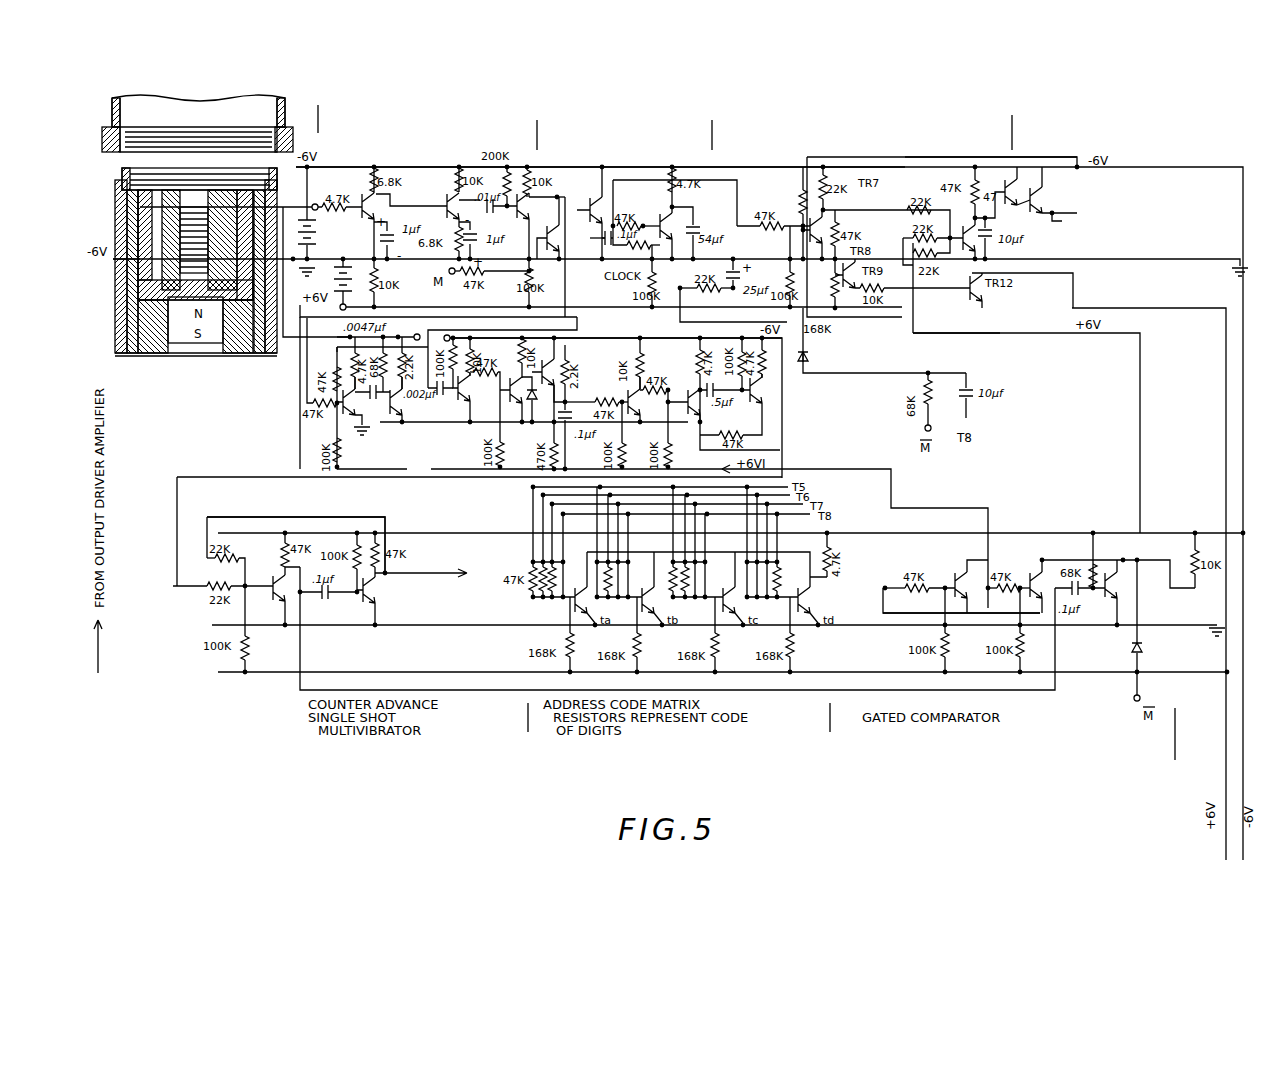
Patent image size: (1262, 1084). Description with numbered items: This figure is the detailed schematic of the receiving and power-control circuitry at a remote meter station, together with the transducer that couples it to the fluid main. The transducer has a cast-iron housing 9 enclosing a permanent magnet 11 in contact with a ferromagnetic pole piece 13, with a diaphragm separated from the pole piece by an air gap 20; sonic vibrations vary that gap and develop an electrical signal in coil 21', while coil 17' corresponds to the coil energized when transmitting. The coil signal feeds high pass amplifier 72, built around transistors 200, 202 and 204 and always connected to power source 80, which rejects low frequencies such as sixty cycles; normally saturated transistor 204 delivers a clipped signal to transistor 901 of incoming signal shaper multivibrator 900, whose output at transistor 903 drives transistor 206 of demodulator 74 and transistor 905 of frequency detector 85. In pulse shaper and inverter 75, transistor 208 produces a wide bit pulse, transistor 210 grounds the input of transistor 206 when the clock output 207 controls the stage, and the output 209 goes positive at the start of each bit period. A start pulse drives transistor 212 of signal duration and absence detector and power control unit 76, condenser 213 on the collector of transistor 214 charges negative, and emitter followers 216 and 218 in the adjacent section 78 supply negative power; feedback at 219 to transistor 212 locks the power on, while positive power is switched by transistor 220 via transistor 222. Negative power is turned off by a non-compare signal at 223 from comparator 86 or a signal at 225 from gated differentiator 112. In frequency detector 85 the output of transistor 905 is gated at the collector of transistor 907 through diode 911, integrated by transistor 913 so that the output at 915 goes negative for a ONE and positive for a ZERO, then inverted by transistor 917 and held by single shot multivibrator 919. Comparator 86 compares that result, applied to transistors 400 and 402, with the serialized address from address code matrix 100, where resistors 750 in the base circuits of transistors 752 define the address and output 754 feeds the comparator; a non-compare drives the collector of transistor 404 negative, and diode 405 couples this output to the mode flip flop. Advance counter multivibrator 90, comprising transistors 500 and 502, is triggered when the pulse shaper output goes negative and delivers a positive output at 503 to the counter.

The housing 9 is at (115, 275).
The permanent magnet 11 is at (225, 338).
The pole piece 13 is at (170, 293).
The permanent magnet 17' is at (195, 342).
The air gap 20 is at (222, 192).
The transducer coil 21' is at (146, 240).
The high pass amplifier 72 is at (402, 137).
The demodulator 74 is at (600, 137).
The pulse shaper and inverter 75 is at (680, 137).
The signal duration and absence detector and power control unit 76 is at (867, 137).
The output stage 78 is at (1056, 137).
The power source 80 is at (328, 235).
The frequency detector 85 is at (466, 463).
The comparator 86 is at (986, 771).
The advance counter multivibrator 90 is at (392, 776).
The address code matrix 100 is at (683, 771).
The gated differentiator 112 is at (966, 373).
The transistor 200 is at (404, 237).
The transistor 202 is at (447, 194).
The transistor 204 is at (524, 226).
The transistor 206 is at (597, 186).
The clock output 207 is at (613, 262).
The transistor 208 is at (665, 195).
The output of pulse shaper and inverter 209 is at (724, 209).
The transistor 210 is at (551, 229).
The transistor 212 is at (825, 228).
The condenser 213 is at (992, 228).
The transistor 214 is at (960, 230).
The emitter follower transistor 216 is at (1000, 186).
The emitter follower transistor 218 is at (1053, 194).
The feedback point 219 is at (796, 216).
The transistor 220 is at (1003, 292).
The transistor 222 is at (890, 288).
The power turn-off signal input 223 is at (1042, 333).
The power turn-off signal input 225 is at (808, 352).
The transistor 400 is at (1027, 578).
The transistor 402 is at (950, 578).
The transistor 404 is at (1115, 566).
The diode 405 is at (1145, 649).
The transistor 500 is at (281, 593).
The transistor 502 is at (378, 596).
The multivibrator output 503 is at (400, 573).
The resistors 750 is at (530, 578).
The transistors 752 is at (575, 622).
The matrix output 754 is at (812, 596).
The incoming signal shaper multivibrator 900 is at (378, 463).
The transistor 901 is at (340, 410).
The transistor 903 is at (404, 416).
The transistor 905 is at (466, 395).
The transistor 907 is at (538, 388).
The diode 911 is at (571, 378).
The transistor 913 is at (556, 366).
The integrator output 915 is at (570, 408).
The transistor 917 is at (642, 400).
The single shot multivibrator 919 is at (758, 421).